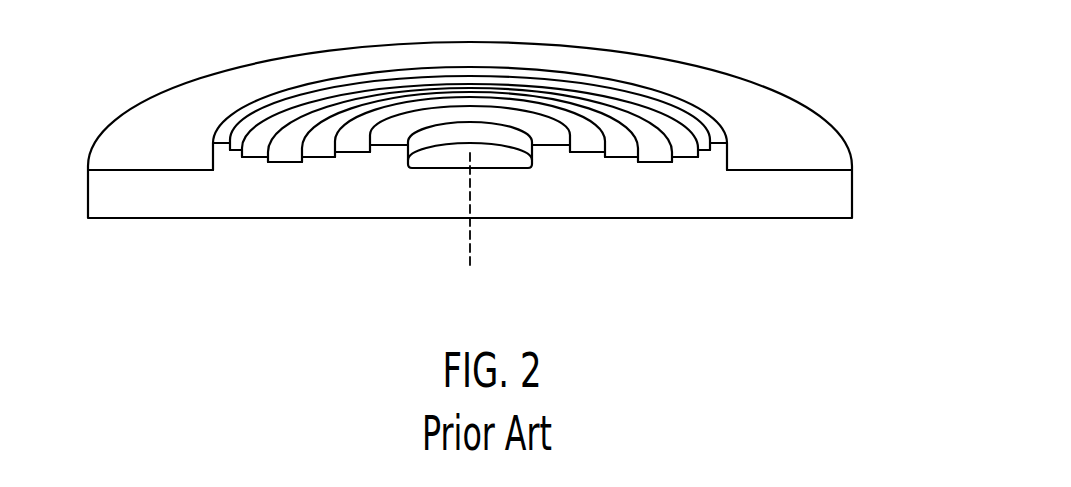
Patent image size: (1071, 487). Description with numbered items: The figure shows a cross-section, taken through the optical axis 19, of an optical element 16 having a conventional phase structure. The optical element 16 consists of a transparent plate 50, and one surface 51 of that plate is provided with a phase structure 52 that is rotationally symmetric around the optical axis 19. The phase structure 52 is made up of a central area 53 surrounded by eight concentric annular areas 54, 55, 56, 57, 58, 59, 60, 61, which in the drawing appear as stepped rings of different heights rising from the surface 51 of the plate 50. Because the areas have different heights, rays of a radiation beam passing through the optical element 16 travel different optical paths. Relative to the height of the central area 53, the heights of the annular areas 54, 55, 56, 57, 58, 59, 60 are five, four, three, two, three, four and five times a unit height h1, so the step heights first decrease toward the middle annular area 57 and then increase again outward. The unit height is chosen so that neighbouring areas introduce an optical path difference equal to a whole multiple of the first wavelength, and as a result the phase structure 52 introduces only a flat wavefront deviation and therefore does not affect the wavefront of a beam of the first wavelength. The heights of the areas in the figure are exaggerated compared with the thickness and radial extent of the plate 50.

The optical element 16 is at (830, 65).
The optical axis 19 is at (466, 248).
The transparent plate 50 is at (838, 200).
The surface 51 is at (838, 165).
The phase structure 52 is at (497, 277).
The central area 53 is at (508, 168).
The annular area 54 is at (550, 145).
The annular area 55 is at (587, 152).
The annular area 56 is at (623, 157).
The annular area 57 is at (655, 162).
The annular area 58 is at (678, 157).
The annular area 59 is at (702, 150).
The annular area 60 is at (723, 143).
The annular area 61 is at (762, 170).